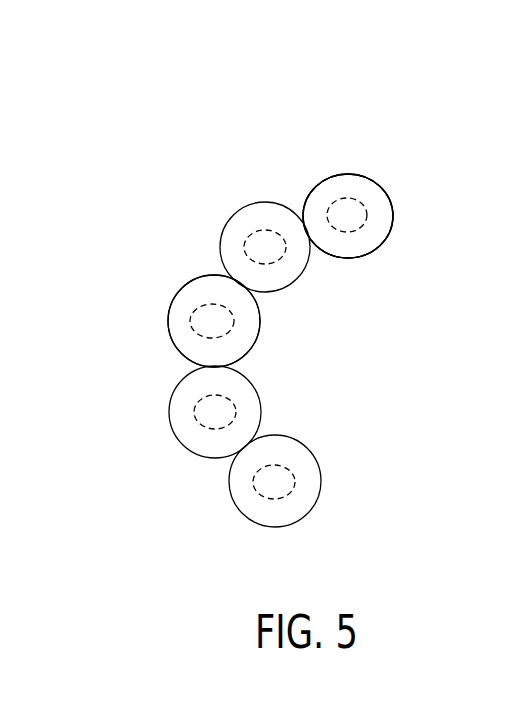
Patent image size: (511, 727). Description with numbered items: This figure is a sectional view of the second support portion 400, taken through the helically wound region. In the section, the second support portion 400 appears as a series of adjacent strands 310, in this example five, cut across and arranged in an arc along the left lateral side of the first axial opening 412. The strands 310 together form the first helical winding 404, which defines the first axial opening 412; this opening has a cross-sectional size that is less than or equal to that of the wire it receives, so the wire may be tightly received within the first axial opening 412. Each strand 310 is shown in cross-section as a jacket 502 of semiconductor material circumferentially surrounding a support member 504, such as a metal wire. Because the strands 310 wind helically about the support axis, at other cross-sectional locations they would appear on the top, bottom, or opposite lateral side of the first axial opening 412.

The second support portion 400 is at (176, 122).
The strands 310 is at (308, 192).
The first helical winding 404 is at (177, 293).
The jacket 502 is at (327, 193).
The support member 504 is at (352, 218).
The first axial opening 412 is at (430, 266).